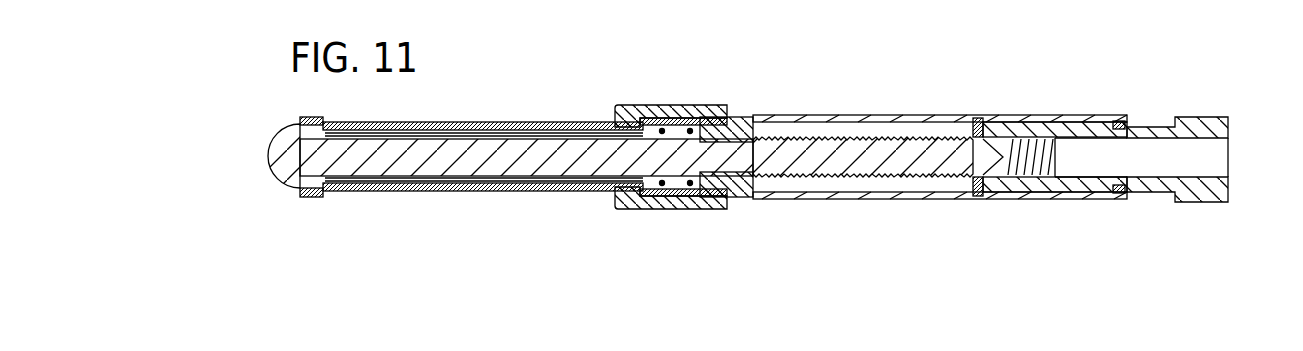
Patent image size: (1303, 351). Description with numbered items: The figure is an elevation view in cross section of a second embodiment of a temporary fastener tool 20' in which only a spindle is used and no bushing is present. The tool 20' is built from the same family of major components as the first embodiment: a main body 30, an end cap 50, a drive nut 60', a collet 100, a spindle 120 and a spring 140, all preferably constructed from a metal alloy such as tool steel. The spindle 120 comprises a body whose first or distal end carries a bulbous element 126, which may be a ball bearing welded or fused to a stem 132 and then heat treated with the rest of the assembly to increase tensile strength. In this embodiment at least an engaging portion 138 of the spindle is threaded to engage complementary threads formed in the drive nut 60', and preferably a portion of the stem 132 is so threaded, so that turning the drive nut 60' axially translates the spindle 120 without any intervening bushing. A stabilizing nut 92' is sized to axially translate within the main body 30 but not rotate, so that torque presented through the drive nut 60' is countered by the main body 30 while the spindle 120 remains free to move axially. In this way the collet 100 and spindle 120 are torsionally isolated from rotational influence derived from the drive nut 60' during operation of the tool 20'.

The collet 100 is at (462, 118).
The bulbous element 126 is at (287, 148).
The spindle 120 is at (430, 160).
The end cap 50 is at (657, 104).
The spring 140 is at (678, 181).
The stabilizing nut 92' is at (748, 131).
The main body 30 is at (852, 116).
The stem 132 is at (945, 157).
The engaging portion 138 is at (995, 153).
The tool 20' is at (1041, 221).
The drive nut 60' is at (1206, 125).